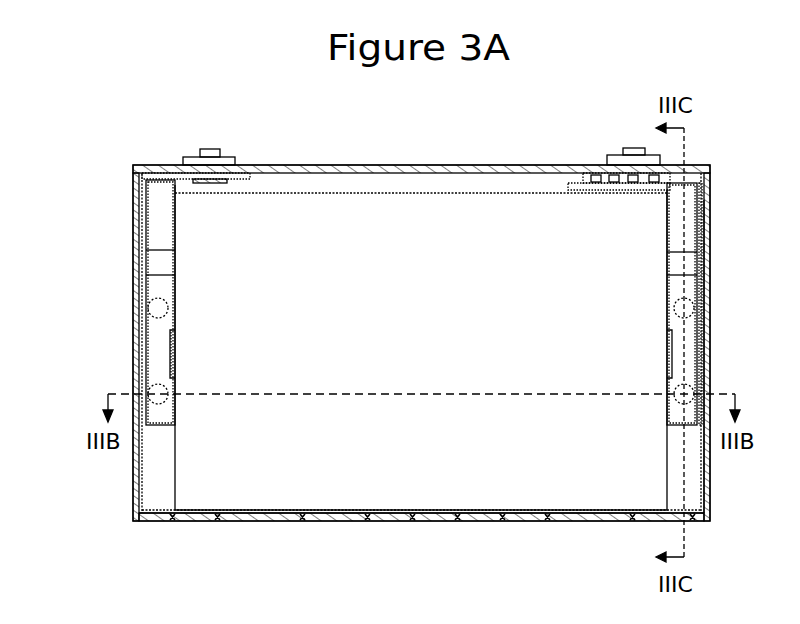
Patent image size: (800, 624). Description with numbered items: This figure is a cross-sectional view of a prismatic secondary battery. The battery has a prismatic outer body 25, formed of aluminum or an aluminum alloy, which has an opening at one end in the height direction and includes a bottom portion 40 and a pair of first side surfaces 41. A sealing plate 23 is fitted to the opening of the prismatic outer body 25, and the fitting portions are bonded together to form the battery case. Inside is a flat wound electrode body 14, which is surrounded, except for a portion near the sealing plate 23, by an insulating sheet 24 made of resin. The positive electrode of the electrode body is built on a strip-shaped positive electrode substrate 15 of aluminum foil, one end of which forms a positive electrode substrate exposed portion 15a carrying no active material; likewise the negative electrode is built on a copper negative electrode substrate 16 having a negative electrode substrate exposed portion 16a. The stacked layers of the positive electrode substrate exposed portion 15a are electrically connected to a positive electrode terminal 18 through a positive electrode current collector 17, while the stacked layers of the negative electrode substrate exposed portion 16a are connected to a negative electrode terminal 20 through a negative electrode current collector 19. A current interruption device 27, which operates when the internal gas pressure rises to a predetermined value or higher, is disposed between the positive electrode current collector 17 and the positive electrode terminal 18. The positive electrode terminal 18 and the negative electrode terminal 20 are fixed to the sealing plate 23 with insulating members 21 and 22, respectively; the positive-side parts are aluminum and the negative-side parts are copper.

The flat wound electrode body 14 is at (441, 475).
The positive electrode substrate 15 is at (678, 455).
The positive electrode substrate exposed portion 15a is at (690, 485).
The negative electrode substrate 16 is at (160, 467).
The negative electrode substrate exposed portion 16a is at (158, 490).
The positive electrode current collector 17 is at (690, 238).
The positive electrode terminal 18 is at (628, 150).
The negative electrode current collector 19 is at (153, 290).
The negative electrode terminal 20 is at (206, 150).
The insulating member 21 is at (607, 172).
The insulating member 22 is at (236, 166).
The sealing plate 23 is at (466, 165).
The insulating sheet 24 is at (513, 521).
The prismatic outer body 25 is at (607, 521).
The current interruption device 27 is at (622, 186).
The bottom portion 40 is at (361, 522).
The first side surfaces 41 is at (136, 322).